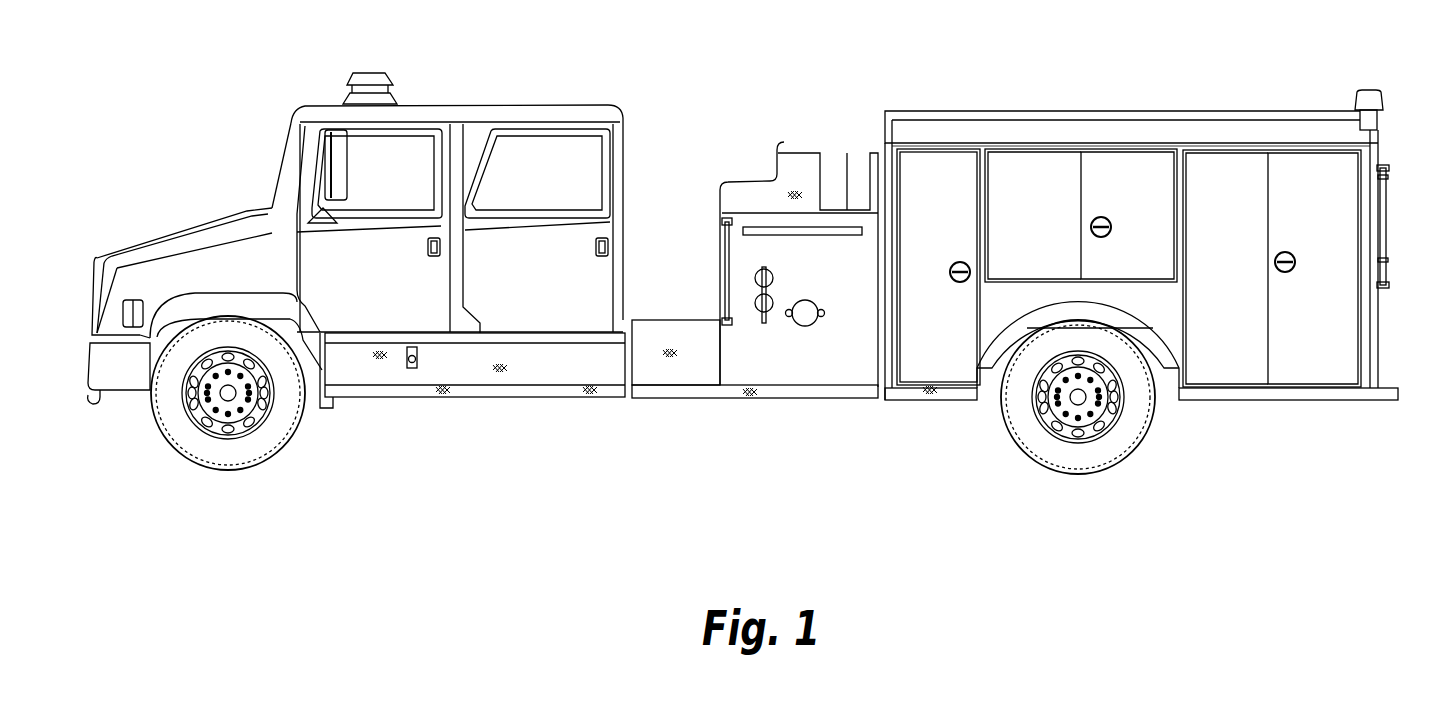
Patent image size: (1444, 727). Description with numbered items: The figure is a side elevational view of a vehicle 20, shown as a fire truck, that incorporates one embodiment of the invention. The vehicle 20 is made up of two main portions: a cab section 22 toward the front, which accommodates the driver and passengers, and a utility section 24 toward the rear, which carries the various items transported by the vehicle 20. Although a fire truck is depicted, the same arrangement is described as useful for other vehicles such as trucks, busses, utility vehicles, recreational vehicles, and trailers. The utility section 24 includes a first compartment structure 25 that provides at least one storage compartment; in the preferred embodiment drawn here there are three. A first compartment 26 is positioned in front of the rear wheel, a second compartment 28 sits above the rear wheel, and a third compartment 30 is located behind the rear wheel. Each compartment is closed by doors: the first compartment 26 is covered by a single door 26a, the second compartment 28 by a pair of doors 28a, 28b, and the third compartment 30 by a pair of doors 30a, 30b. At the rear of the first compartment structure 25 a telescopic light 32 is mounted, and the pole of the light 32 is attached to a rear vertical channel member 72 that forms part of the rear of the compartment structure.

The vehicle 20 is at (1142, 72).
The cab section 22 is at (293, 107).
The utility section 24 is at (1008, 111).
The first compartment structure 25 is at (1072, 149).
The first compartment 26 is at (943, 338).
The door 26a is at (955, 229).
The second compartment 28 is at (1150, 160).
The door 28a is at (1049, 229).
The door 28b is at (1156, 229).
The third compartment 30 is at (1303, 330).
The door 30a is at (1225, 229).
The door 30b is at (1331, 229).
The telescopic light 32 is at (1356, 100).
The rear vertical channel member 72 is at (1372, 162).